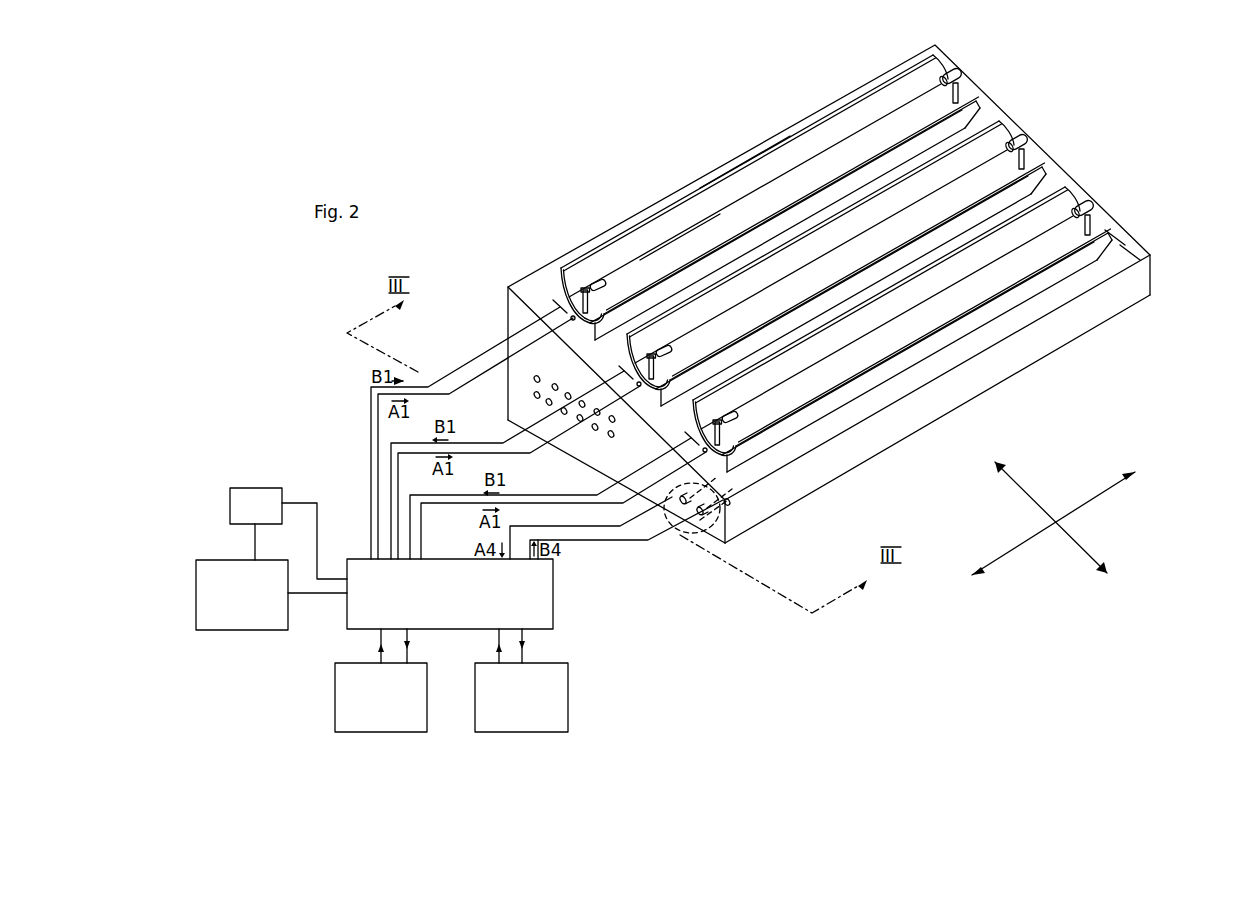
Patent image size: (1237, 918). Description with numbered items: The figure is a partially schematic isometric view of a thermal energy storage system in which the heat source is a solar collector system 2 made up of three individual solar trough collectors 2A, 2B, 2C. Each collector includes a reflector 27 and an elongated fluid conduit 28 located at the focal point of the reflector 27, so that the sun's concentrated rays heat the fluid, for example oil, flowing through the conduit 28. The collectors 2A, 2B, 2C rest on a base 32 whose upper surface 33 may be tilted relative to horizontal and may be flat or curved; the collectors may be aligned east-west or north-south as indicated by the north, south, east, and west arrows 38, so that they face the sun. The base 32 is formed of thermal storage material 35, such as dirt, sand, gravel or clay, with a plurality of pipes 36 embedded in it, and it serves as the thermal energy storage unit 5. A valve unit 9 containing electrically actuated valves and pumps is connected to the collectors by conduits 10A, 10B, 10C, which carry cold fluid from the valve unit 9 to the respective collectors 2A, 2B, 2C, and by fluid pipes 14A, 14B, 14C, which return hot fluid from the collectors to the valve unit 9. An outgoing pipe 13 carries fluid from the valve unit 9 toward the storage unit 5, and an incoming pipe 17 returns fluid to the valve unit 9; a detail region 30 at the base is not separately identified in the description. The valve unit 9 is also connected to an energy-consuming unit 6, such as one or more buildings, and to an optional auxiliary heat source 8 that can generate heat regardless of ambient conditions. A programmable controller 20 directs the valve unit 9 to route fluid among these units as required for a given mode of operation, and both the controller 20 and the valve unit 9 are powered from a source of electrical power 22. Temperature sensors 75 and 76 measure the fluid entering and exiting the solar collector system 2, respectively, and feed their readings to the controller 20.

The solar collector system 2 is at (975, 37).
The solar collector 2A is at (930, 92).
The solar collector 2B is at (982, 127).
The solar collector 2C is at (1050, 193).
The thermal energy storage unit 5 is at (708, 519).
The energy-consuming unit 6 is at (517, 732).
The auxiliary heat source 8 is at (374, 732).
The valve unit 9 is at (540, 598).
The conduit 10A is at (488, 366).
The conduit 10B is at (567, 435).
The conduit 10C is at (563, 503).
The outgoing pipe 13 is at (590, 527).
The fluid pipe 14A is at (467, 362).
The fluid pipe 14B is at (463, 443).
The fluid pipe 14C is at (550, 495).
The incoming pipe 17 is at (633, 542).
The programmable controller 20 is at (214, 632).
The source of electrical power 22 is at (250, 498).
The reflector 27 is at (742, 177).
The elongated fluid conduit 28 is at (677, 237).
The nozzle region 30 is at (703, 538).
The base 32 is at (1132, 252).
The upper surface 33 is at (1115, 240).
The thermal storage material 35 is at (565, 368).
The pipes 36 is at (538, 398).
The north, south, east, and west arrows 38 is at (1070, 545).
The temperature sensor 75 is at (1076, 212).
The temperature sensor 76 is at (720, 416).